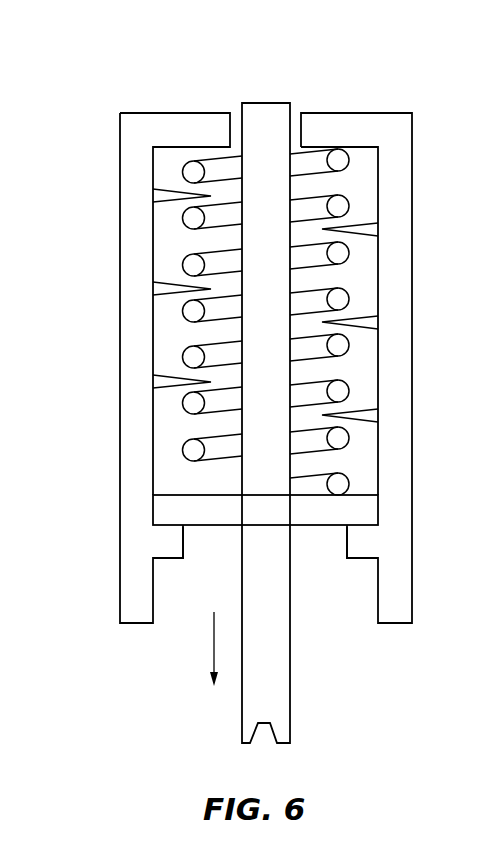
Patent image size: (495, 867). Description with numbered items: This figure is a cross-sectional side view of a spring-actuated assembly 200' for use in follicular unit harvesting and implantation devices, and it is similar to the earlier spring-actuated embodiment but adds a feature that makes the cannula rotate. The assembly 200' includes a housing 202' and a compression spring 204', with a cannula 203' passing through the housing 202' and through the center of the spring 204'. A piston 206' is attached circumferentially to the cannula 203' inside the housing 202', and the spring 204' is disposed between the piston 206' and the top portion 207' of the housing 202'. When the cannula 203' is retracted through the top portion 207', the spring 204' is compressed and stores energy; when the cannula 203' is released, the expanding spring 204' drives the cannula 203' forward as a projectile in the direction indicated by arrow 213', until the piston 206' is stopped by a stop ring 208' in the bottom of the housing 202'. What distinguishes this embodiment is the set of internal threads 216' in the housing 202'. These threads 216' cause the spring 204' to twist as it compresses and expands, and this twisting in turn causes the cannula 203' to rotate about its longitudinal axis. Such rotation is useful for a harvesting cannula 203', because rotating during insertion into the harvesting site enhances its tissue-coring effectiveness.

The assembly 200' is at (260, 379).
The housing 202' is at (356, 336).
The top portion of the housing 207' is at (135, 368).
The compression spring 204' is at (260, 322).
The internal threads 216' is at (401, 322).
The stop ring 208' is at (180, 576).
The piston 206' is at (341, 576).
The cannula 203' is at (316, 423).
The arrow 213' is at (170, 649).